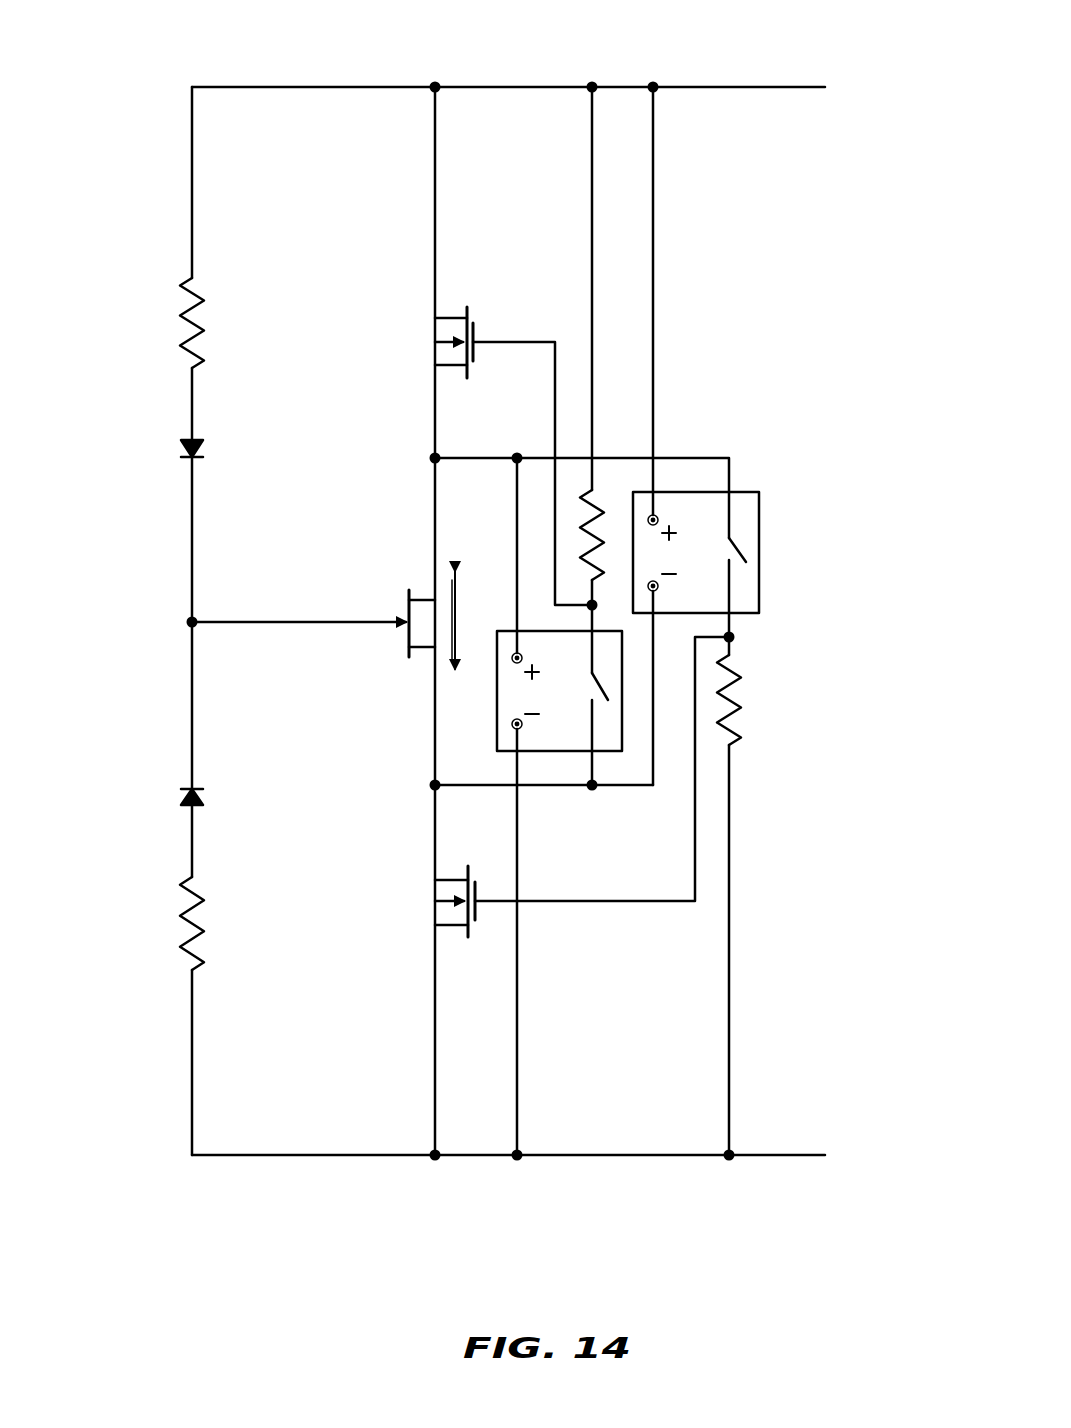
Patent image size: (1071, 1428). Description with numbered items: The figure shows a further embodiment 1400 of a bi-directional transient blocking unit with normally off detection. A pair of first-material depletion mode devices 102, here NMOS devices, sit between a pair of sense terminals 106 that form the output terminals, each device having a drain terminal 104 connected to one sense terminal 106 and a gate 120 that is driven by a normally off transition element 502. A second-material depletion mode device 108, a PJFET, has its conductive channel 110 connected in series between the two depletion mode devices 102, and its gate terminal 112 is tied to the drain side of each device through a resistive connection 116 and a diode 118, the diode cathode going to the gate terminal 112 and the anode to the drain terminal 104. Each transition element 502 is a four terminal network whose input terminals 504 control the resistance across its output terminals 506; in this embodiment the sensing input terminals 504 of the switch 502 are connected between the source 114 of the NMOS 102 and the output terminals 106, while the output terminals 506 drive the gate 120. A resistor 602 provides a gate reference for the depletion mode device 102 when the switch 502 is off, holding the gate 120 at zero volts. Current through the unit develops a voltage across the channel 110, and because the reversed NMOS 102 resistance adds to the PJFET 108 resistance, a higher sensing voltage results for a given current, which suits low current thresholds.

The further embodiment 1400 is at (112, 72).
The sense terminal 106 is at (528, 87).
The drain terminal 104 is at (447, 318).
The first-material depletion mode device 102 is at (582, 616).
The gate 120 is at (480, 342).
The source 114 is at (445, 366).
The resistive connection 116 is at (211, 312).
The diode 118 is at (205, 440).
The second-material depletion mode device 108 is at (354, 604).
The conductive channel 110 is at (455, 640).
The gate terminal 112 is at (395, 630).
The resistor 602 is at (598, 492).
The input terminals 504 is at (657, 485).
The normally off transition element 502 is at (762, 536).
The output terminals 506 is at (733, 636).